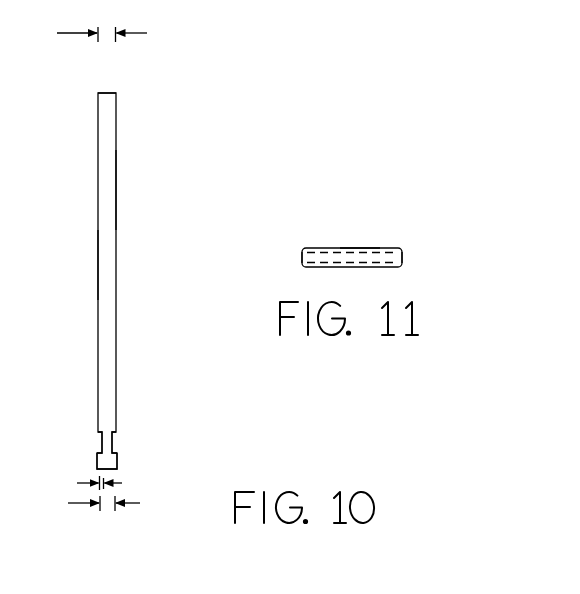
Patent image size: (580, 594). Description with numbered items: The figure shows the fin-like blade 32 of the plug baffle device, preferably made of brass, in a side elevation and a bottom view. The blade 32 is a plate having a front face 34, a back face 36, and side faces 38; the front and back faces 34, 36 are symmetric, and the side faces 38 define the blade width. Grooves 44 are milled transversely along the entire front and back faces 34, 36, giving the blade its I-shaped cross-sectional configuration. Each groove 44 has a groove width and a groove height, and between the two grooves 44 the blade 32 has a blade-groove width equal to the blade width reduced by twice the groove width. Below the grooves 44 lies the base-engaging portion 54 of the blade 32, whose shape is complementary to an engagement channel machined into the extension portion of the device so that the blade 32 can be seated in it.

In FIG. 10, the blade 32 is at (146, 90).
In FIG. 11, the blade 32 is at (435, 210).
In FIG. 10, the front face 34 is at (97, 143).
In FIG. 11, the front face 34 is at (362, 248).
In FIG. 10, the back face 36 is at (117, 188).
In FIG. 10, the side faces 38 is at (108, 263).
In FIG. 11, the side faces 38 is at (302, 255).
In FIG. 10, the grooves 44 is at (98, 447).
In FIG. 10, the base-engaging portion 54 is at (159, 439).